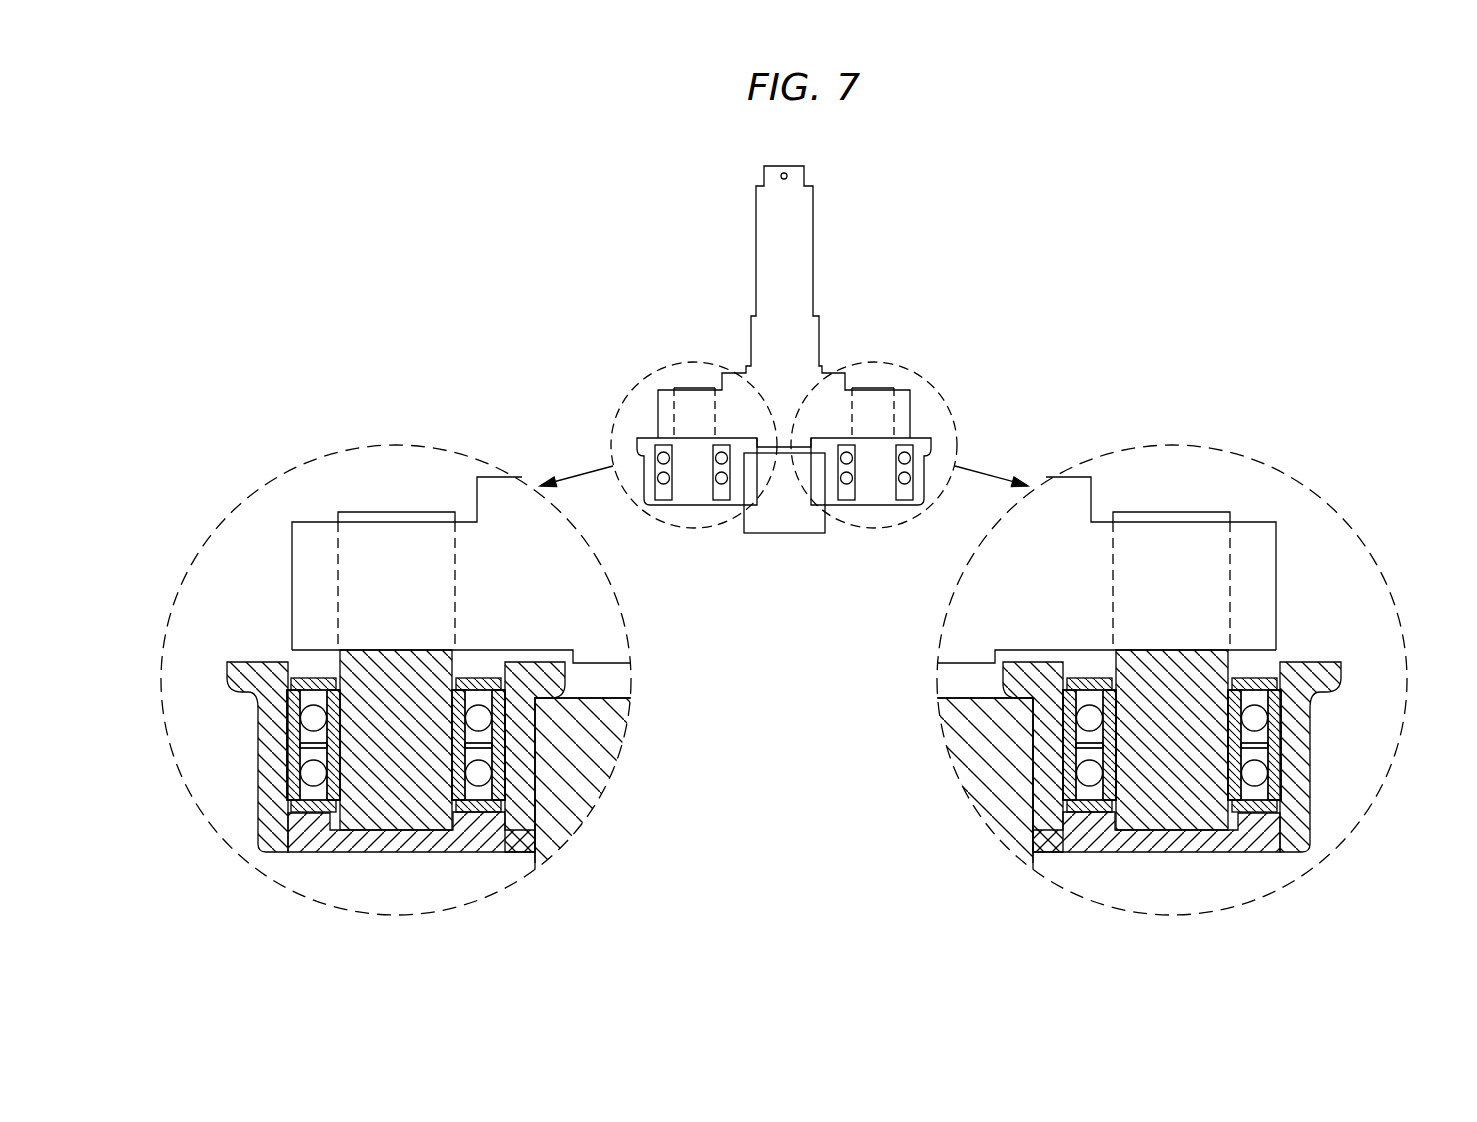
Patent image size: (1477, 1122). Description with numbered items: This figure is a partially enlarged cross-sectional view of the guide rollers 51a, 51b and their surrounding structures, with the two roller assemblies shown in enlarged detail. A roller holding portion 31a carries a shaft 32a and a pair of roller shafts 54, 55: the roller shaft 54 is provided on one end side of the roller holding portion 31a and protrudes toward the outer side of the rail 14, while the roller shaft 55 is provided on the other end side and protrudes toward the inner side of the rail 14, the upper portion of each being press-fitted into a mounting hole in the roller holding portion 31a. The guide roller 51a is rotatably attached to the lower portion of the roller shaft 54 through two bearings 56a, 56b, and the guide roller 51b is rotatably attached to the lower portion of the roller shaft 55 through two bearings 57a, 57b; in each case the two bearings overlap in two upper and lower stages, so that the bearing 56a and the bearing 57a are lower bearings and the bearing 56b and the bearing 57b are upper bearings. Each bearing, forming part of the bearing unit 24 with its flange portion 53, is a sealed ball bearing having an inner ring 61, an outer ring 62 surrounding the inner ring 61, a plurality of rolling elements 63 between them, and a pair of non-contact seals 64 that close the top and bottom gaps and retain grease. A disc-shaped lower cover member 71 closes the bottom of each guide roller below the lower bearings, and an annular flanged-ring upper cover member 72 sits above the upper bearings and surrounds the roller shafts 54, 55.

The rail 14 is at (784, 533).
The bearing unit 24 is at (656, 378).
The roller holding portion 31a is at (655, 423).
The shaft 32a is at (815, 220).
The guide roller 51a is at (273, 852).
The guide roller 51b is at (1295, 852).
The flange portion 53 is at (227, 672).
The roller shaft 54 is at (400, 512).
The roller shaft 55 is at (1168, 512).
The lower bearing 56a is at (630, 954).
The upper bearing 56b is at (217, 448).
The lower bearing 57a is at (1035, 954).
The upper bearing 57b is at (1451, 448).
The inner ring 61 is at (325, 690).
The outer ring 62 is at (300, 690).
The rolling elements 63 is at (313, 676).
The seal 64 is at (505, 710).
The lower cover member 71 is at (368, 852).
The upper cover member 72 is at (522, 660).